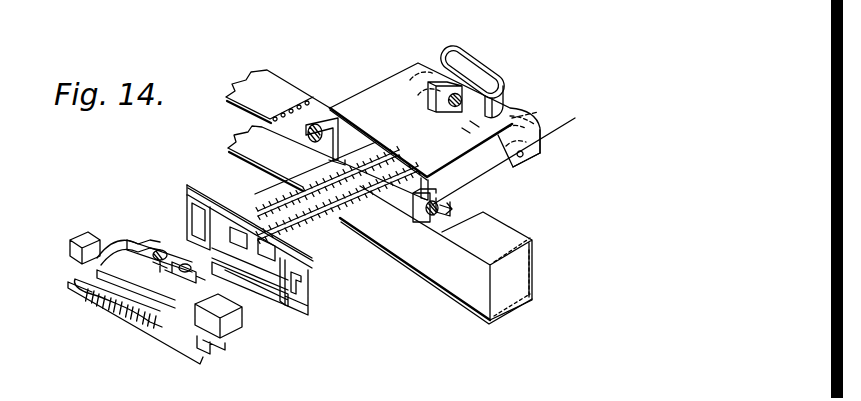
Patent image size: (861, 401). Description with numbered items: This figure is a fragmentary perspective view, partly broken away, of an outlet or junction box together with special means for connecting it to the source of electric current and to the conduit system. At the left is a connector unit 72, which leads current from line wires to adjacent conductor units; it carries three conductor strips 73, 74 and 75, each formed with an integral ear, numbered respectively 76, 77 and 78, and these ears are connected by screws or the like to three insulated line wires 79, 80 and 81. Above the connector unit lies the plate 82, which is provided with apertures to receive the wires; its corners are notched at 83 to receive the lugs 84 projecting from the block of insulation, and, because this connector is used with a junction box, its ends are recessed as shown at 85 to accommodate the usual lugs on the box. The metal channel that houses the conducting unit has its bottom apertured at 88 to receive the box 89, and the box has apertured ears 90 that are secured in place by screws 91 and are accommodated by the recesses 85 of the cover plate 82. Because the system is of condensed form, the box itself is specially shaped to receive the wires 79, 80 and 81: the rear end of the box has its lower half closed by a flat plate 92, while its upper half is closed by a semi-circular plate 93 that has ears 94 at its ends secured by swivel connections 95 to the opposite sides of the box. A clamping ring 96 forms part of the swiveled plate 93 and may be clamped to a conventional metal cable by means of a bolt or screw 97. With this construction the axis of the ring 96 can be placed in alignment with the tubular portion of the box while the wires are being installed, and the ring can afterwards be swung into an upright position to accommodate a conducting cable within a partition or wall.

The connector unit 72 is at (163, 333).
The conductor strip 73 is at (173, 325).
The conductor strip 74 is at (241, 318).
The conductor strip 75 is at (215, 353).
The ear 76 is at (230, 280).
The ear 77 is at (184, 262).
The ear 78 is at (152, 249).
The insulated line wire 79 is at (336, 218).
The insulated line wire 80 is at (327, 190).
The insulated line wire 81 is at (303, 177).
The plate 82 is at (240, 212).
The notch 83 is at (190, 183).
The lug 84 is at (137, 230).
The recess 85 is at (309, 286).
The aperture 88 is at (432, 181).
The box 89 is at (514, 166).
The apertured ear 90 is at (416, 214).
The screw 91 is at (452, 209).
The flat plate 92 is at (515, 152).
The semi-circular plate 93 is at (508, 108).
The ear 94 is at (538, 112).
The swivel connection 95 is at (541, 142).
The clamping ring 96 is at (488, 74).
The bolt or screw 97 is at (466, 78).